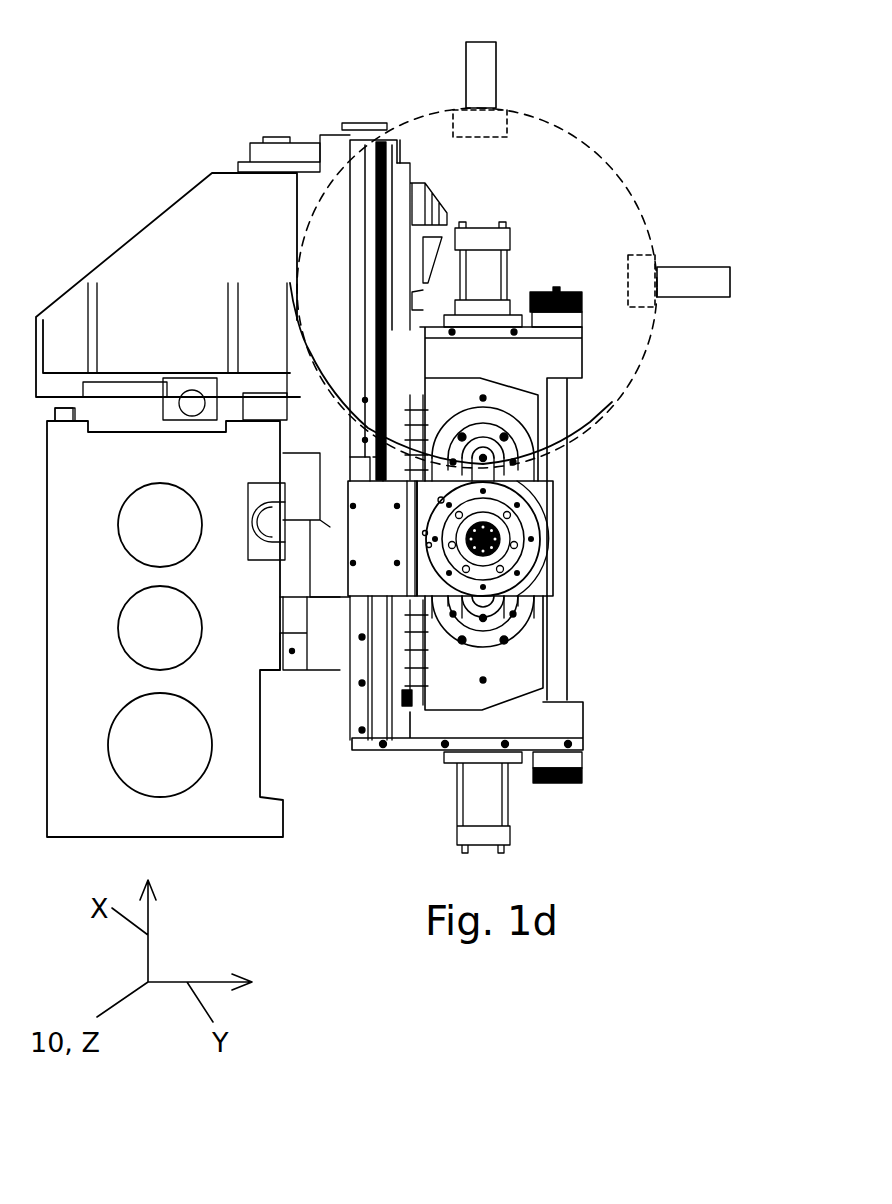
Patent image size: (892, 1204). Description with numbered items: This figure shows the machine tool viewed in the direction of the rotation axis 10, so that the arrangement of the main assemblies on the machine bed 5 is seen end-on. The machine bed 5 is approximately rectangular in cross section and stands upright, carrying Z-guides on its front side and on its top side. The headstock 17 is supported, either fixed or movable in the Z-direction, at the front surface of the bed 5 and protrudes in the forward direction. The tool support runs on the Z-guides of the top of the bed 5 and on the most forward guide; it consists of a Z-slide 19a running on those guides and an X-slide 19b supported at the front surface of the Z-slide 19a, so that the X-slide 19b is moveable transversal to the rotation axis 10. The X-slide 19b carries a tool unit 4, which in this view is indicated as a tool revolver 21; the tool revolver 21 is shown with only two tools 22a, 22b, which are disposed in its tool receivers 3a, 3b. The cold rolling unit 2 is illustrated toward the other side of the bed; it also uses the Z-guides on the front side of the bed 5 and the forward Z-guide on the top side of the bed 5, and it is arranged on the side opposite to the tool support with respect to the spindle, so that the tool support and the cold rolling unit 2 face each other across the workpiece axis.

The cold rolling unit 2 is at (614, 660).
The tool receiver 3a is at (640, 280).
The tool receiver 3b is at (472, 127).
The tool unit 4 is at (608, 163).
The machine bed 5 is at (193, 622).
The rotation axis 10 is at (490, 548).
The headstock 17 is at (348, 539).
The Z-slide 19a is at (211, 272).
The X-slide 19b is at (405, 183).
The tool revolver 21 is at (500, 286).
The tool 22a is at (703, 285).
The tool 22b is at (483, 82).